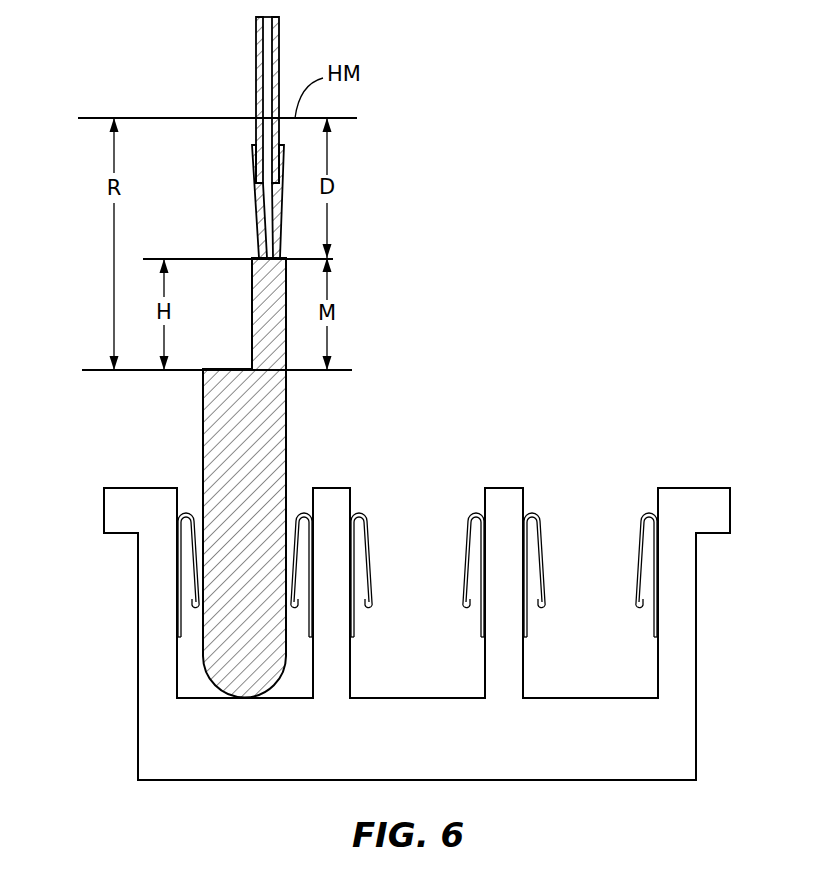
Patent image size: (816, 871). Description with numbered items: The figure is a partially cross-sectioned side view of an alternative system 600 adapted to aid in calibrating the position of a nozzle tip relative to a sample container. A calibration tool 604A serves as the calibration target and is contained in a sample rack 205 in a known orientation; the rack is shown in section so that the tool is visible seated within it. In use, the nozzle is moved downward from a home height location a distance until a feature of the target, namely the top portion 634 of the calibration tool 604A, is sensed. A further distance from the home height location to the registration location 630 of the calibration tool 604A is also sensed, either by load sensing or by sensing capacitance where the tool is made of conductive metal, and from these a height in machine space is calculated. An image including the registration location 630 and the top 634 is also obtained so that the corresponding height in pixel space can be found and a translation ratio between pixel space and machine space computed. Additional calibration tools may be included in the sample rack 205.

The alternative system 600 is at (396, 398).
The calibration tool 604A is at (298, 357).
The registration location 630 is at (247, 368).
The top portion 634 is at (254, 257).
The sample rack 205 is at (137, 632).